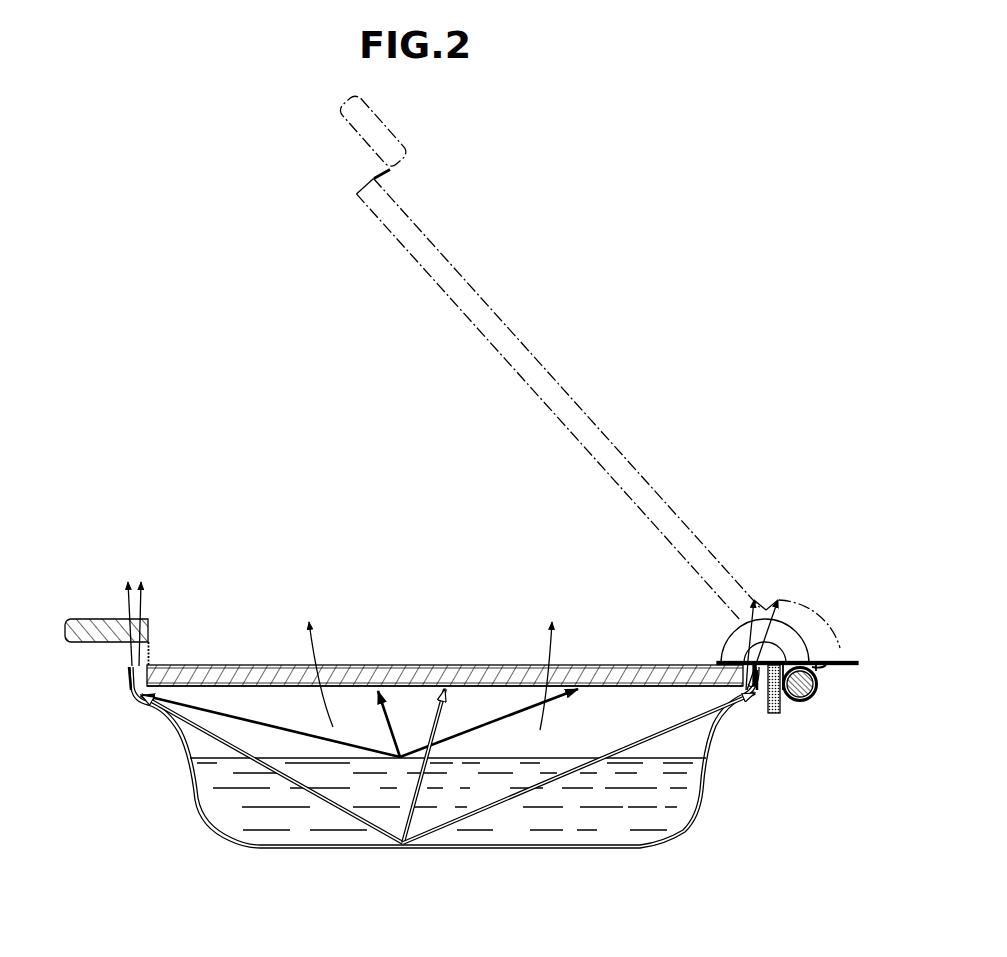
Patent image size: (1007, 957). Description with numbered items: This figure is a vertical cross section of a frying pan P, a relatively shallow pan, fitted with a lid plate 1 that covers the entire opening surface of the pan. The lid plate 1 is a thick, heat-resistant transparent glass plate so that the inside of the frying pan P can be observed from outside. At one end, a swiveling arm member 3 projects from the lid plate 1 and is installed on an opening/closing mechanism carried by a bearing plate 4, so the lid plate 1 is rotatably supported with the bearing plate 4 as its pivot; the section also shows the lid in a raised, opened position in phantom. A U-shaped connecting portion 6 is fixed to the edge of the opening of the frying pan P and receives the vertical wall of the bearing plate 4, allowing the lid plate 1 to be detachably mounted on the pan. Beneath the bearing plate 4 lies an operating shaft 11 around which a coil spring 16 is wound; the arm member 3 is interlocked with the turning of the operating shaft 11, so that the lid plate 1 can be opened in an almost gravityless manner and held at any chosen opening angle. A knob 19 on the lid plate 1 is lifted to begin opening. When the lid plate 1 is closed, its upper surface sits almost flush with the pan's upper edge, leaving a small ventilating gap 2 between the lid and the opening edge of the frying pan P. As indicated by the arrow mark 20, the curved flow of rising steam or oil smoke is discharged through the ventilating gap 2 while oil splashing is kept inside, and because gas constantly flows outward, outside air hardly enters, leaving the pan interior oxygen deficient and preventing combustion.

The lid plate 1 is at (474, 297).
The ventilating gap 2 is at (128, 683).
The swiveling arm member 3 is at (736, 642).
The bearing plate 4 is at (848, 660).
The connecting portion 6 is at (785, 717).
The operating shaft 11 is at (817, 683).
The spring 16 is at (813, 700).
The knob 19 is at (383, 127).
The arrow mark 20 is at (500, 717).
The frying pan P is at (198, 806).